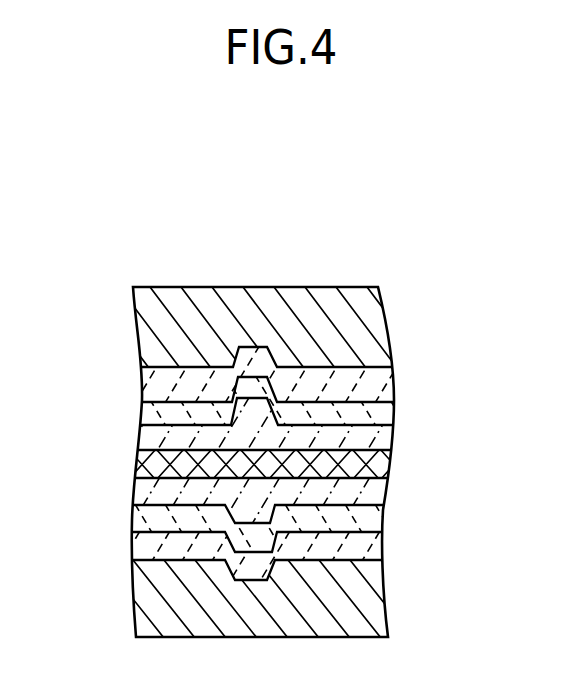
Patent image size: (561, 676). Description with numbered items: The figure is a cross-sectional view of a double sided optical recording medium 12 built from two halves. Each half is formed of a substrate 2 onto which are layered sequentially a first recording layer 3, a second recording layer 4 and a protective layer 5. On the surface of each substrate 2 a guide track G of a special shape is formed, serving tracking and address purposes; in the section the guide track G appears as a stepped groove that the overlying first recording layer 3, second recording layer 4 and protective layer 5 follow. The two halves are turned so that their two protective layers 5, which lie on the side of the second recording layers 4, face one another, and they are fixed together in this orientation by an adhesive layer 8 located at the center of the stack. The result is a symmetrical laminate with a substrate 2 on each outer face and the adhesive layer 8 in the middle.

The double sided optical recording medium 12 is at (390, 285).
The substrate 2 is at (372, 338).
The first recording layer 3 is at (380, 390).
The second recording layer 4 is at (383, 418).
The protective layer 5 is at (380, 442).
The adhesive layer 8 is at (385, 470).
The guide track G is at (252, 355).